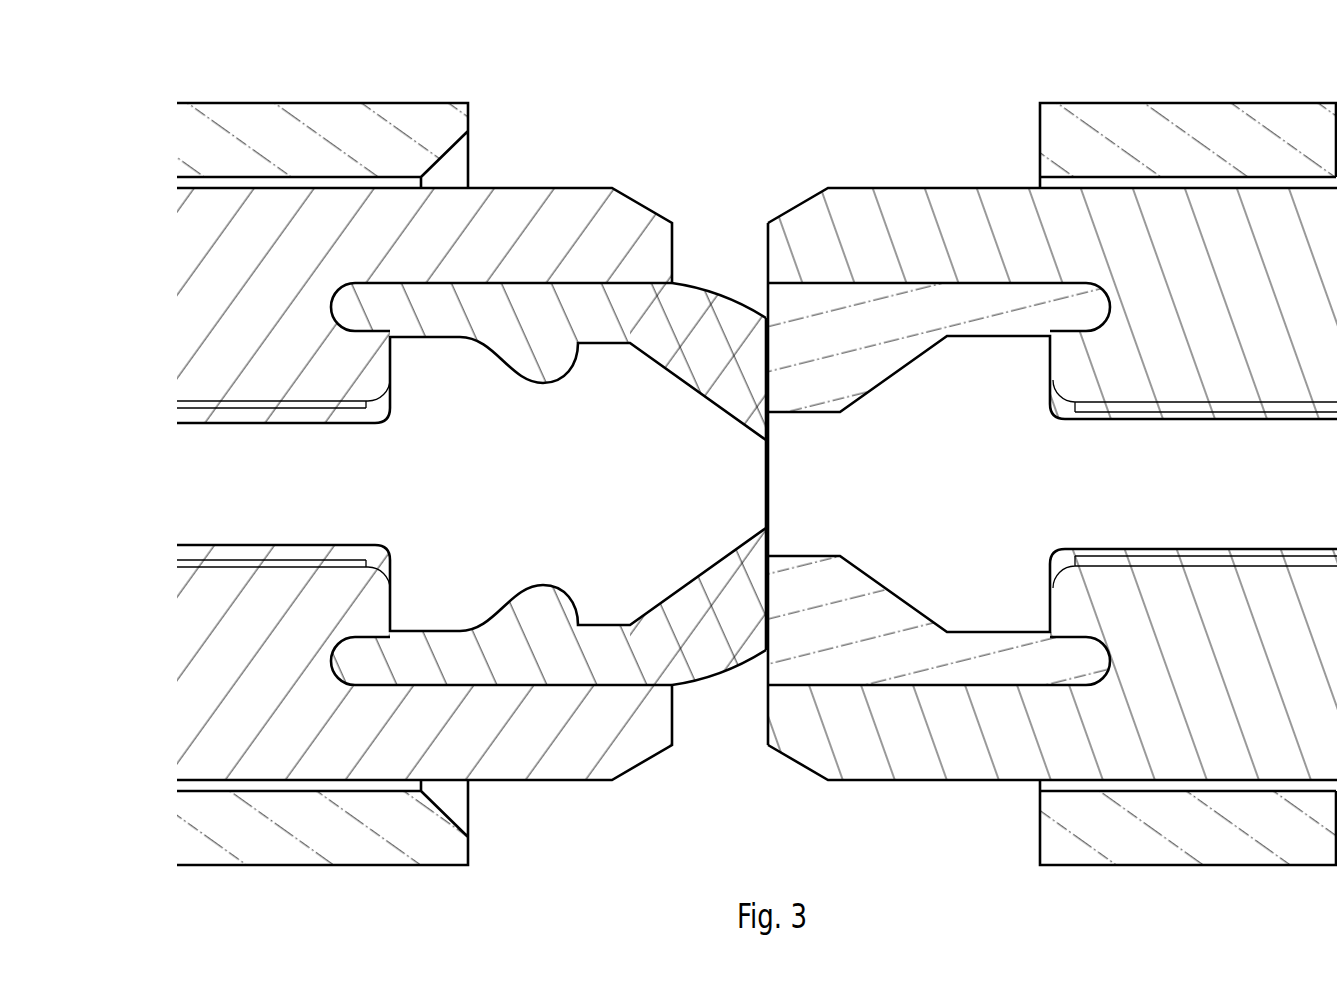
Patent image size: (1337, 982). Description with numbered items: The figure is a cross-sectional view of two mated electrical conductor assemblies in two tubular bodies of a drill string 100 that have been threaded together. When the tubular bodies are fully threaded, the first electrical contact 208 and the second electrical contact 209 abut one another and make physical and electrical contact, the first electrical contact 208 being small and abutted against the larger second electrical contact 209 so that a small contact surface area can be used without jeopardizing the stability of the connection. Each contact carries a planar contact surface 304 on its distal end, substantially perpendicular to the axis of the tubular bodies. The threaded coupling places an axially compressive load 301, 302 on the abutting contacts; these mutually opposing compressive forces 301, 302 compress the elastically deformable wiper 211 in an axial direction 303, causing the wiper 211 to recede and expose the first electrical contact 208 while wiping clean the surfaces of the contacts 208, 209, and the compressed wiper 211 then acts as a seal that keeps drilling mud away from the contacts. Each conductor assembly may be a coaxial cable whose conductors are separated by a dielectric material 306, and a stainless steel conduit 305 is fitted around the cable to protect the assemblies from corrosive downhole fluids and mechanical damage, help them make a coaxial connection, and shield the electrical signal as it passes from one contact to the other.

The drill string 100 is at (757, 451).
The stainless steel conduit 305 is at (436, 92).
The dielectric material 306 is at (910, 792).
The axial direction 303 is at (697, 308).
The wiper 211 is at (722, 692).
The axially compressive load 302 is at (577, 318).
The axially compressive load 301 is at (734, 352).
The first electrical contact 208 is at (732, 454).
The second electrical contact 209 is at (806, 452).
The planar contact surface 304 is at (768, 488).